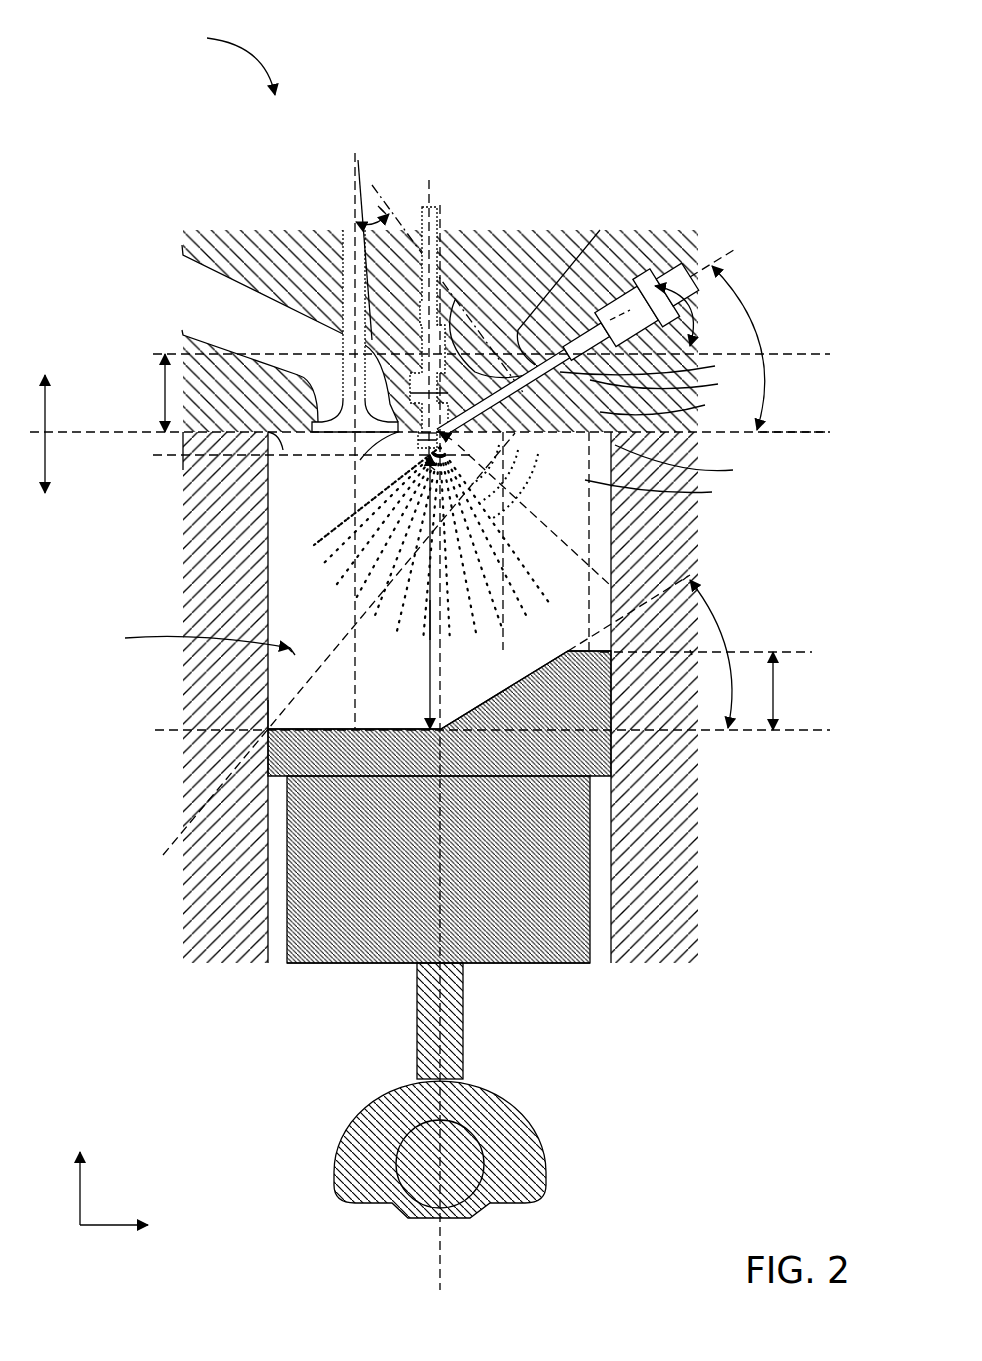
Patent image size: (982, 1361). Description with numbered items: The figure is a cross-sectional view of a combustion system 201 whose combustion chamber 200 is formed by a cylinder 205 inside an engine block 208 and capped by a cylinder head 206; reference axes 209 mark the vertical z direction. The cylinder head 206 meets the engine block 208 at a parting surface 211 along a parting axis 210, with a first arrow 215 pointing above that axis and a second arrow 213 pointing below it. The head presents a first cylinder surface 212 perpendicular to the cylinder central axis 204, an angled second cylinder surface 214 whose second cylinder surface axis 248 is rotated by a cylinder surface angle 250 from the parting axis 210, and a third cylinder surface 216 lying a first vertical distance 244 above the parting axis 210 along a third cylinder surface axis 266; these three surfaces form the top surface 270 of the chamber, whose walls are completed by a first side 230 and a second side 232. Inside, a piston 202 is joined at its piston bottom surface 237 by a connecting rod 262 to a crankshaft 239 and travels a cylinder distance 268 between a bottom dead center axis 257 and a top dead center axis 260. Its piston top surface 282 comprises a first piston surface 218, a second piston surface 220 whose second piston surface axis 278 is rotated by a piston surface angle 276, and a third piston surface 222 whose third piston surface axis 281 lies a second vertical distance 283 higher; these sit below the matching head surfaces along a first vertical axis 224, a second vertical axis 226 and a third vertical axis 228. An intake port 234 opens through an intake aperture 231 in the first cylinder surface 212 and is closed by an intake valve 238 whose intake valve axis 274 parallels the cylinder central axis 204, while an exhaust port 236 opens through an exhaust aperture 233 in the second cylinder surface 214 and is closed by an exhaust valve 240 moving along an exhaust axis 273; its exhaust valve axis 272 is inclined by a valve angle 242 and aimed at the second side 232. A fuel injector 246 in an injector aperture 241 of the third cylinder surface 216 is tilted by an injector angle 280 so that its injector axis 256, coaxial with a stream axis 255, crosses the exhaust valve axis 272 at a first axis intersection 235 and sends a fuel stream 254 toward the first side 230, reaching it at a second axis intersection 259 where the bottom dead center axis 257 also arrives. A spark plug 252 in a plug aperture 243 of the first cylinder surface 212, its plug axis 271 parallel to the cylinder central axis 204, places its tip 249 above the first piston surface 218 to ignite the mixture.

The combustion chamber 200 is at (189, 642).
The combustion system 201 is at (221, 62).
The piston 202 is at (600, 855).
The cylinder central axis 204 is at (440, 1248).
The cylinder 205 is at (689, 462).
The cylinder head 206 is at (220, 230).
The engine block 208 is at (700, 760).
The reference axes 209 is at (120, 1206).
The parting axis 210 is at (780, 440).
The parting surface 211 is at (190, 434).
The first cylinder surface 212 is at (285, 440).
The second arrow 213 is at (45, 457).
The second cylinder surface 214 is at (548, 350).
The first arrow 215 is at (45, 405).
The third cylinder surface 216 is at (657, 364).
The first piston surface 218 is at (380, 727).
The second piston surface 220 is at (505, 685).
The third piston surface 222 is at (575, 648).
The first vertical axis 224 is at (355, 690).
The second vertical axis 226 is at (503, 590).
The third vertical axis 228 is at (589, 555).
The first side 230 is at (270, 548).
The intake aperture 231 is at (350, 445).
The second side 232 is at (610, 575).
The exhaust aperture 233 is at (670, 406).
The intake port 234 is at (220, 262).
The first axis intersection 235 is at (663, 491).
The exhaust port 236 is at (520, 280).
The piston bottom surface 237 is at (560, 965).
The intake valve 238 is at (343, 300).
The crankshaft 239 is at (490, 1175).
The exhaust valve 240 is at (447, 337).
The injector aperture 241 is at (673, 383).
The valve angle 242 is at (374, 190).
The plug aperture 243 is at (418, 440).
The first vertical distance 244 is at (163, 378).
The fuel injector 246 is at (615, 280).
The second cylinder surface axis 248 is at (735, 250).
The tip 249 is at (430, 455).
The cylinder surface angle 250 is at (755, 345).
The spark plug 252 is at (420, 466).
The fuel stream 254 is at (348, 545).
The stream axis 255 is at (318, 672).
The injector axis 256 is at (288, 648).
The bottom dead center axis 257 is at (160, 733).
The second axis intersection 259 is at (268, 725).
The top dead center axis 260 is at (165, 455).
The connecting rod 262 is at (465, 1005).
The third cylinder surface axis 266 is at (195, 340).
The cylinder distance 268 is at (428, 665).
The top surface 270 is at (500, 455).
The plug axis 271 is at (430, 200).
The exhaust valve axis 272 is at (385, 210).
The exhaust axis 273 is at (381, 209).
The intake valve axis 274 is at (356, 218).
The piston surface angle 276 is at (705, 600).
The second piston surface axis 278 is at (700, 570).
The injector angle 280 is at (682, 330).
The third piston surface axis 281 is at (688, 655).
The piston top surface 282 is at (440, 700).
The second vertical distance 283 is at (775, 692).